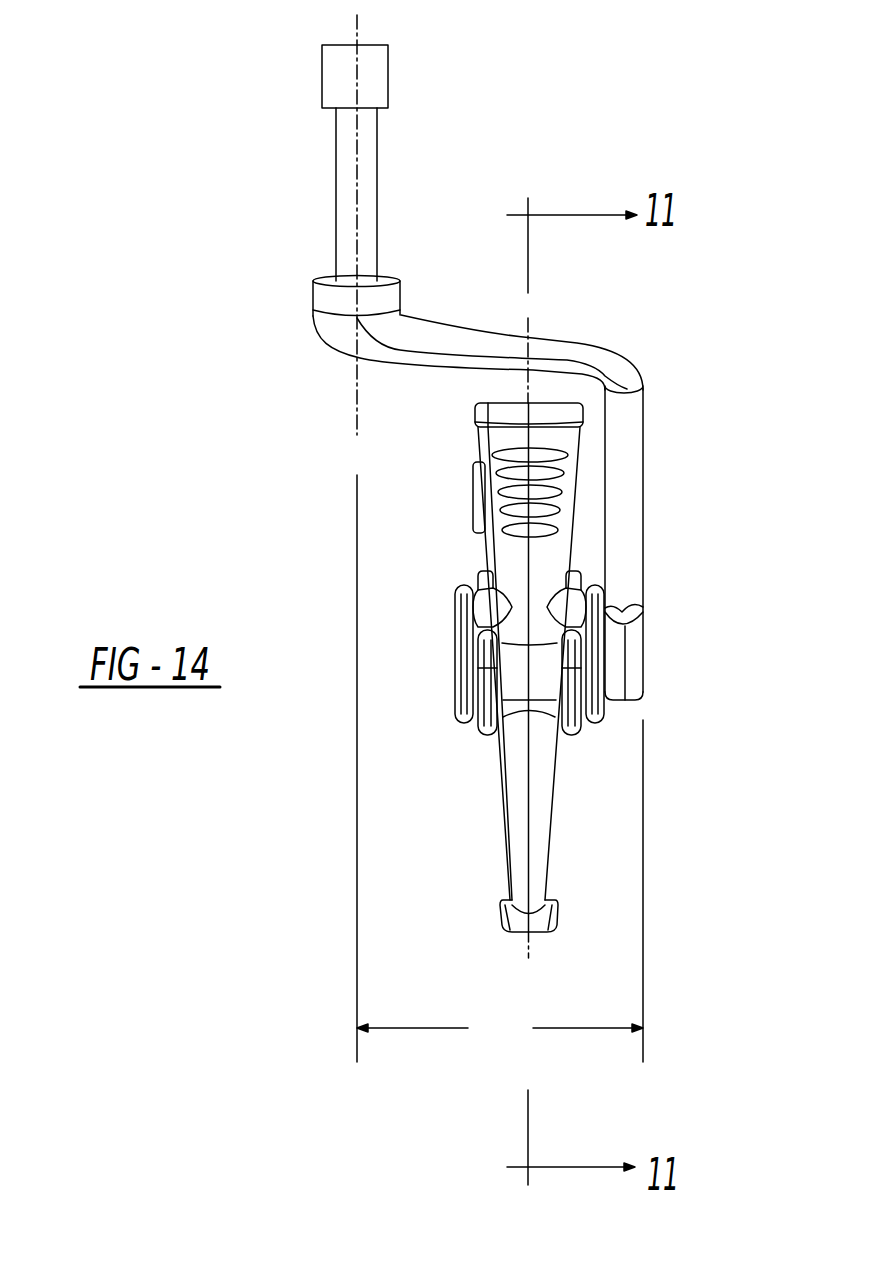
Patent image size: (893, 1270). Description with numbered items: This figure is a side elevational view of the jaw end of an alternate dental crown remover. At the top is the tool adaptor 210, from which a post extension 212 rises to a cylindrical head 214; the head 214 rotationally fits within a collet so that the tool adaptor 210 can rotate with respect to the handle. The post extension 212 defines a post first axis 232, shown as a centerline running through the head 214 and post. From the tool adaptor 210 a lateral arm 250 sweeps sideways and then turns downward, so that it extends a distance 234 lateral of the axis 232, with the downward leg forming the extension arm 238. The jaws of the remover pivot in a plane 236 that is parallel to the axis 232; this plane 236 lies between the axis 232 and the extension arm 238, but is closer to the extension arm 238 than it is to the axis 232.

The tool adaptor 210 is at (407, 313).
The post extension 212 is at (335, 213).
The cylindrical head 214 is at (323, 80).
The post first axis 232 is at (357, 405).
The distance 234 is at (500, 768).
The plane 236 is at (523, 393).
The extension arm 238 is at (643, 525).
The lateral arm 250 is at (578, 343).